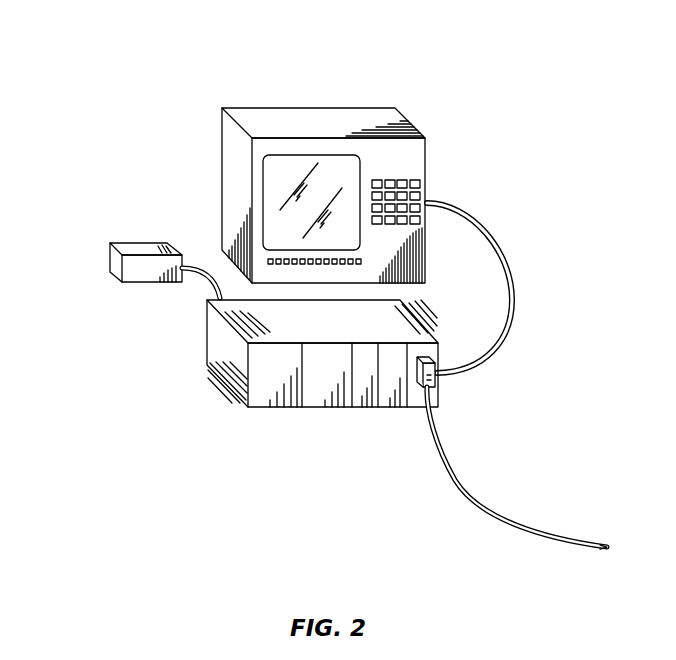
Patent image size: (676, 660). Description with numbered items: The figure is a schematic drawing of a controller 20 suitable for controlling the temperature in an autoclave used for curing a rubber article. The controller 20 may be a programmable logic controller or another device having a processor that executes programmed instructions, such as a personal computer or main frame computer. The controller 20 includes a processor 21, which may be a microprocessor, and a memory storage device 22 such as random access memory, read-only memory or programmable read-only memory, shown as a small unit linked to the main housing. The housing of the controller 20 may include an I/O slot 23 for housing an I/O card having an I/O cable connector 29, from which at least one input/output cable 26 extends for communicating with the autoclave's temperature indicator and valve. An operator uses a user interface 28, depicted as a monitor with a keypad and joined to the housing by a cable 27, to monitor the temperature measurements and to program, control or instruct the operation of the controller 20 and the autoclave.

The controller 20 is at (105, 76).
The processor 21 is at (294, 389).
The memory storage device 22 is at (113, 260).
The I/O slot 23 is at (320, 407).
The input/output cable 26 is at (472, 495).
The monitor cable 27 is at (469, 288).
The user interface 28 is at (405, 126).
The I/O cable connector 29 is at (436, 385).